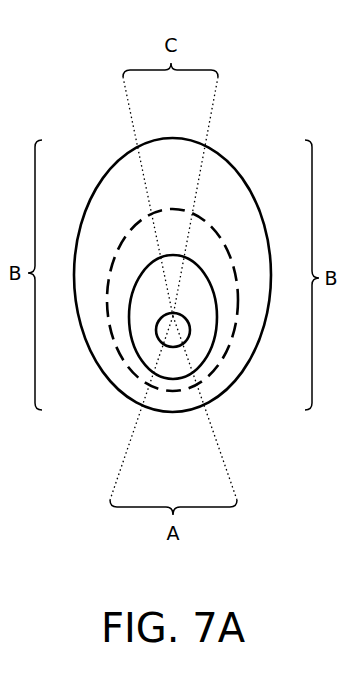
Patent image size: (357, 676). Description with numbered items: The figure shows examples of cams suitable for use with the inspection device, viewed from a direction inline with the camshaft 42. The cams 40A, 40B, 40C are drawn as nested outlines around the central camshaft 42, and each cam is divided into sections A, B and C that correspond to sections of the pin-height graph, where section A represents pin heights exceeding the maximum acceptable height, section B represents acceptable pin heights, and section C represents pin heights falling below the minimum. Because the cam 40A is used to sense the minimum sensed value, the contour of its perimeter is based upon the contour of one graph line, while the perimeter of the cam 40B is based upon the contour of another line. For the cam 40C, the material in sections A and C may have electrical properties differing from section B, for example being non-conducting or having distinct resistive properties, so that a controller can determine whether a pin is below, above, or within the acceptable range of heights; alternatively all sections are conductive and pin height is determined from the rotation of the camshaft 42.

The cam 40A is at (217, 232).
The cam 40B is at (212, 278).
The cam 40C is at (272, 262).
The camshaft 42 is at (186, 344).